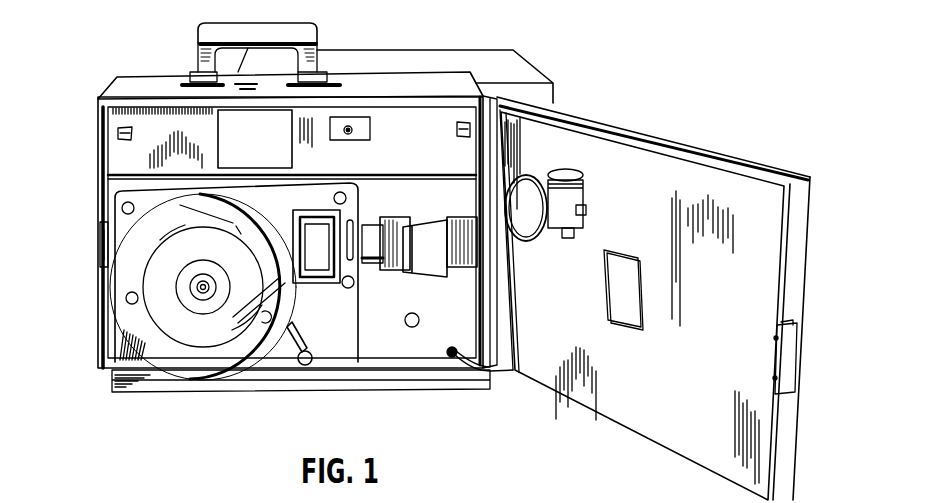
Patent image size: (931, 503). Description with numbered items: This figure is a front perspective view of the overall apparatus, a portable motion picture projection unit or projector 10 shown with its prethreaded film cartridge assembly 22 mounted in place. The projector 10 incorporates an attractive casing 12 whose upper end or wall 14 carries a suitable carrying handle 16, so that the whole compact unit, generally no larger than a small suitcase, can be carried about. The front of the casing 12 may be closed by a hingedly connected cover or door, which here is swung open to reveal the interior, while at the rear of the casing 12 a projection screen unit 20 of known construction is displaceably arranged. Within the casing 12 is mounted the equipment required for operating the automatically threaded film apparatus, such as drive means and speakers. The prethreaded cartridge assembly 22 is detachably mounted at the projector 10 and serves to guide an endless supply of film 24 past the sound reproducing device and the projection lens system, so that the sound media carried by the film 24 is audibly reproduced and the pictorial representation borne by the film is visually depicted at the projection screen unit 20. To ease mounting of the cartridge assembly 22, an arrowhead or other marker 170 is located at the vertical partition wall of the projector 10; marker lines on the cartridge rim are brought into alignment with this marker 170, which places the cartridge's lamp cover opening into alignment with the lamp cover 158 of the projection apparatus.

The projector 10 is at (622, 58).
The casing 12 is at (100, 155).
The upper end or wall 14 is at (137, 87).
The carrying handle 16 is at (213, 32).
The projection screen unit 20 is at (423, 58).
The prethreaded film cartridge assembly 22 is at (115, 283).
The film 24 is at (207, 333).
The lamp cover 158 is at (338, 306).
The marker 170 is at (300, 170).